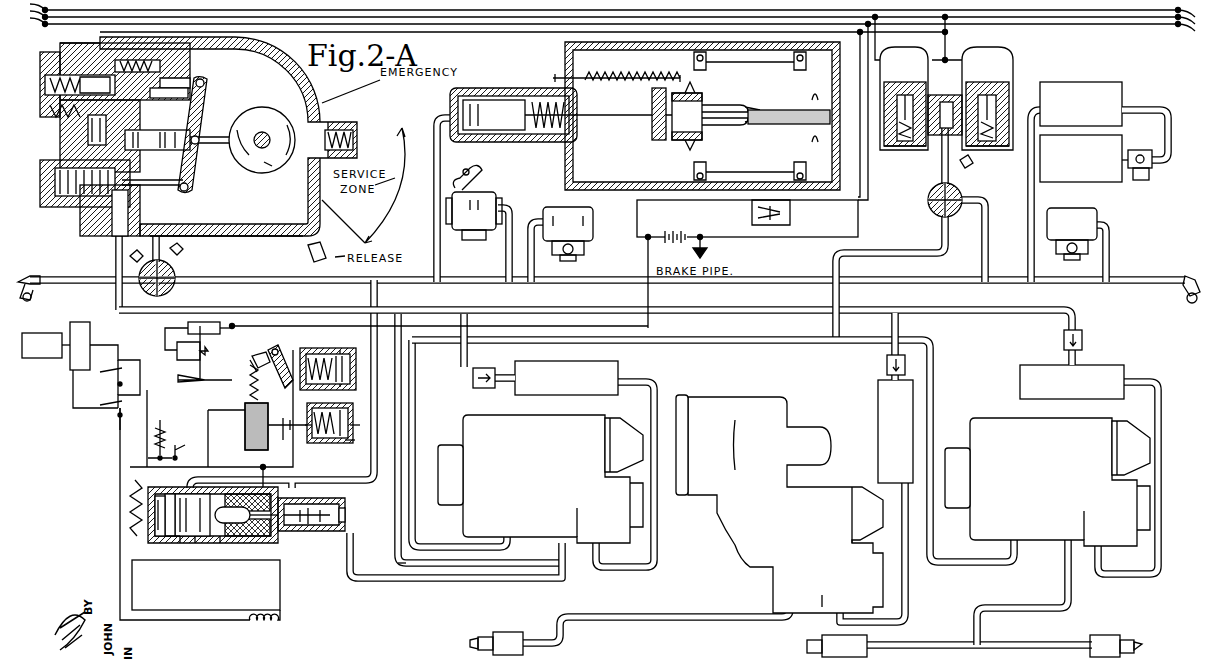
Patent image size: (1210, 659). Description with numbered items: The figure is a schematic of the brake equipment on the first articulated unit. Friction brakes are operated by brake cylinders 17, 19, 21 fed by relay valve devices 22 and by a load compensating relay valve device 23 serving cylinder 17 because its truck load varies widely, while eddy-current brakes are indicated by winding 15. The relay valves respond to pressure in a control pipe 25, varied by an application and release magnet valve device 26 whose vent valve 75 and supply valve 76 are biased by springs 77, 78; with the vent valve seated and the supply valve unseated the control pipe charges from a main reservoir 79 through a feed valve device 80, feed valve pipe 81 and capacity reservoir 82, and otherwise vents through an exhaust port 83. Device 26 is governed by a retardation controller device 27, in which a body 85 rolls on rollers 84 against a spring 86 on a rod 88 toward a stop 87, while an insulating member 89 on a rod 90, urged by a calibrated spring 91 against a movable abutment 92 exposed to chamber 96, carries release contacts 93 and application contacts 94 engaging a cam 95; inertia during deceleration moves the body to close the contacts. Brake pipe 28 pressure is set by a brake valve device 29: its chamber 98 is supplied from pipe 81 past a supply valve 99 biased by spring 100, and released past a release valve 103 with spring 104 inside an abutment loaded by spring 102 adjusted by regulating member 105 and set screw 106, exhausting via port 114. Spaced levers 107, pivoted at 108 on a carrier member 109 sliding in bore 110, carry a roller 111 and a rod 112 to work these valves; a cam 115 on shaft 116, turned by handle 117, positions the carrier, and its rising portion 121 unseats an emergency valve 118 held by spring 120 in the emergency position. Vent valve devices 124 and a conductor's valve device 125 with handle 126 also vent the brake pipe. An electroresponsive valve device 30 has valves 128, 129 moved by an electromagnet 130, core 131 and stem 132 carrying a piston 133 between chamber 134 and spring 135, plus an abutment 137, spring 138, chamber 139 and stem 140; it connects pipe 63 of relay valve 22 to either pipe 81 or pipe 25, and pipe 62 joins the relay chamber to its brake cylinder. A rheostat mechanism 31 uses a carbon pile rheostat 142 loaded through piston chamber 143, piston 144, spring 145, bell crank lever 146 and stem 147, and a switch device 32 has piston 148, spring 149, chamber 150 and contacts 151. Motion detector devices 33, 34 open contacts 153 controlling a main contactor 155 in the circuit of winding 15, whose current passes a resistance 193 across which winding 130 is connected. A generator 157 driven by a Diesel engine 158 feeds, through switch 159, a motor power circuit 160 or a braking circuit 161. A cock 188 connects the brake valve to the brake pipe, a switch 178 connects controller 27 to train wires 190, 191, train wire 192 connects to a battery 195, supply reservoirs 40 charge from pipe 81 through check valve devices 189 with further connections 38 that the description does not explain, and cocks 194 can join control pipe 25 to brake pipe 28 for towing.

The eddy-current brake winding 15 is at (248, 620).
The brake cylinder 17 is at (503, 632).
The brake cylinder 19 is at (808, 642).
The brake cylinder 21 is at (1105, 635).
The relay valve device 22 is at (539, 562).
The load compensating relay valve device 23 is at (773, 388).
The control pipe 25 is at (903, 258).
The application and release magnet valve device 26 is at (934, 167).
The retardation controller device 27 is at (616, 198).
The brake pipe 28 is at (266, 280).
The brake valve device 29 is at (291, 63).
The electroresponsive valve device 30 is at (233, 572).
The rheostat mechanism 31 is at (292, 357).
The fluid pressure operated switch device 32 is at (303, 441).
The relay 33 is at (175, 352).
The motion detector device 34 is at (208, 322).
The pipe 38 is at (618, 567).
The supply reservoir 40 is at (616, 368).
The pipe 62 is at (407, 590).
The pipe 63 is at (446, 562).
The vent valve 75 is at (965, 95).
The supply valve 76 is at (970, 148).
The spring 77 is at (900, 148).
The spring 78 is at (984, 175).
The main reservoir 79 is at (1055, 176).
The feed valve device 80 is at (1140, 178).
The feed valve pipe 81 is at (592, 305).
The capacity reservoir 82 is at (1085, 82).
The exhaust port 83 is at (893, 95).
The rollers 84 is at (715, 62).
The body 85 is at (680, 145).
The spring 86 is at (620, 78).
The stop 87 is at (810, 105).
The rod 88 is at (565, 72).
The insulating member 89 is at (650, 105).
The rod 90 is at (608, 115).
The calibrated spring 91 is at (556, 135).
The movable abutment 92 is at (522, 80).
The release contacts 93 is at (740, 107).
The application contacts 94 is at (738, 126).
The cam 95 is at (778, 118).
The chamber 96 is at (452, 108).
The chamber 98 is at (235, 228).
The supply valve 99 is at (80, 220).
The spring 100 is at (50, 190).
The spring 102 is at (45, 72).
The release valve 103 is at (205, 80).
The spring 104 is at (160, 62).
The regulating member 105 is at (60, 115).
The adjustable set screw 106 is at (45, 88).
The spaced levers 107 is at (196, 118).
The pivot 108 is at (200, 150).
The carrier member 109 is at (150, 187).
The bore 110 is at (60, 150).
The roller 111 is at (205, 88).
The rod 112 is at (150, 186).
The port 114 is at (100, 32).
The cam 115 is at (270, 125).
The shaft 116 is at (260, 150).
The handle 117 is at (310, 262).
The emergency valve 118 is at (320, 108).
The spring 120 is at (332, 125).
The rising portion 121 is at (268, 163).
The brake pipe vent valve device 124 is at (592, 238).
The conductor's valve device 125 is at (494, 185).
The handle 126 is at (470, 168).
The valve 128 is at (312, 540).
The valve 129 is at (318, 570).
The electromagnet winding 130 is at (262, 545).
The movable core 131 is at (225, 545).
The stem 132 is at (270, 560).
The piston 133 is at (195, 555).
The chamber 134 is at (180, 548).
The spring 135 is at (210, 495).
The movable abutment 137 is at (152, 516).
The spring 138 is at (158, 498).
The chamber 139 is at (168, 492).
The stem 140 is at (172, 538).
The carbon pile rheostat 142 is at (252, 432).
The piston chamber 143 is at (350, 350).
The piston 144 is at (340, 350).
The spring 145 is at (335, 407).
The bell crank lever 146 is at (258, 360).
The spring-biased stem 147 is at (250, 380).
The piston 148 is at (355, 410).
The spring 149 is at (318, 440).
The chamber 150 is at (355, 440).
The contacts 151 is at (290, 415).
The contacts 153 is at (178, 378).
The main contactor 155 is at (168, 440).
The generator 157 is at (78, 330).
The Diesel engine 158 is at (40, 333).
The switch 159 is at (105, 385).
The motor power circuit 160 is at (128, 360).
The braking circuit 161 is at (145, 428).
The switch 178 is at (790, 215).
The cock 188 is at (176, 270).
The non-return check valve device 189 is at (1088, 342).
The train wire 190 is at (1036, 12).
The train wire 191 is at (1110, 18).
The train wire 192 is at (1158, 25).
The resistance 193 is at (125, 508).
The cock 194 is at (963, 208).
The battery 195 is at (678, 235).